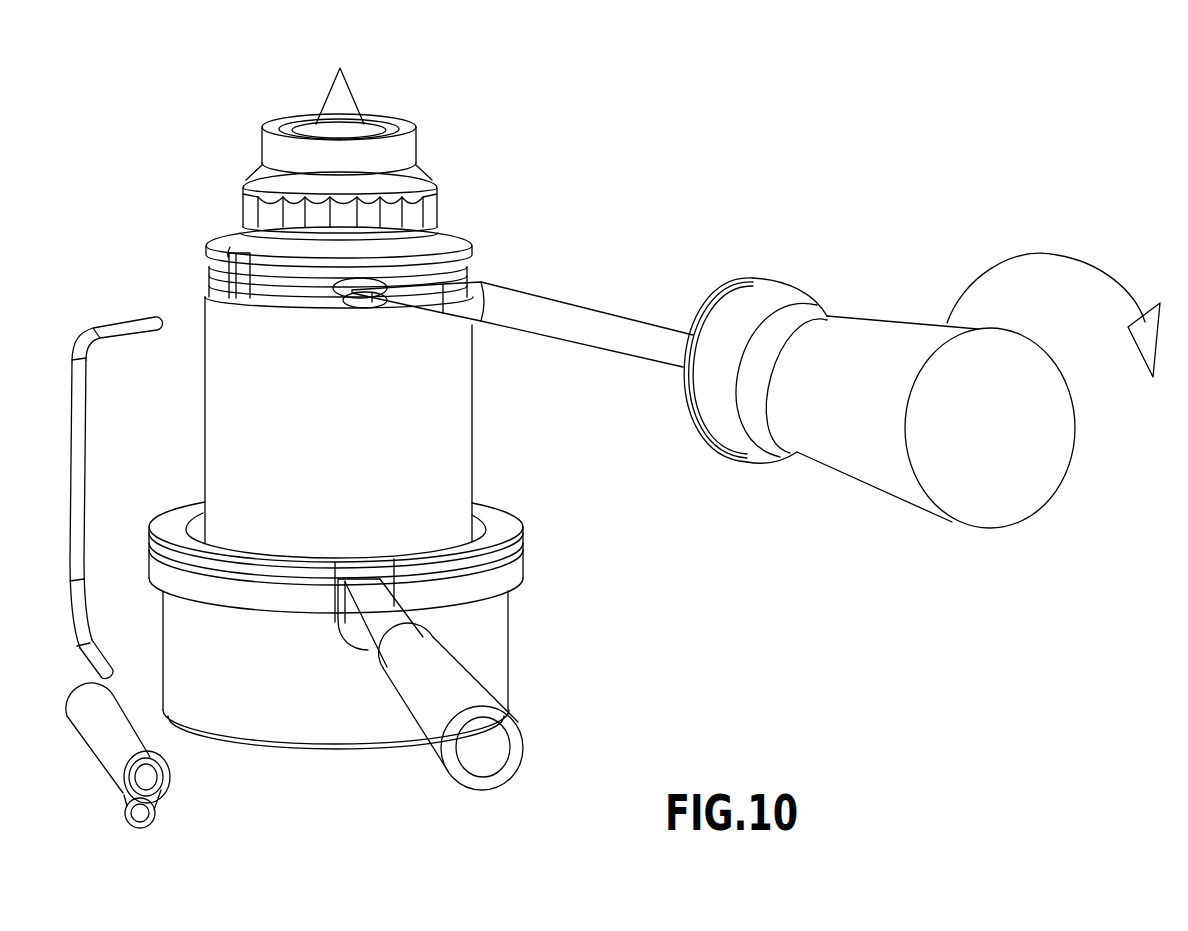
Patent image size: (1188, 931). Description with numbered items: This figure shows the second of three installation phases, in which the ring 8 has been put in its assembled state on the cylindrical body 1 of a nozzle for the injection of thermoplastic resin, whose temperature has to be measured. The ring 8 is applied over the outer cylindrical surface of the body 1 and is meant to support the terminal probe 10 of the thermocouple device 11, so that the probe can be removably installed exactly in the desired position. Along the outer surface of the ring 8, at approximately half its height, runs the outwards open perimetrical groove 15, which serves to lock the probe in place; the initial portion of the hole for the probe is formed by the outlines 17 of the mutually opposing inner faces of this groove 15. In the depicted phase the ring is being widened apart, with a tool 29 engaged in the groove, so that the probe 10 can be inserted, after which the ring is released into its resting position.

The cylindrical body 1 is at (477, 437).
The ring 8 is at (455, 252).
The terminal probe 10 is at (132, 332).
The thermocouple device 11 is at (85, 478).
The perimetrical groove 15 is at (205, 264).
The outline 17 is at (356, 305).
The screwdriver 29 is at (567, 313).